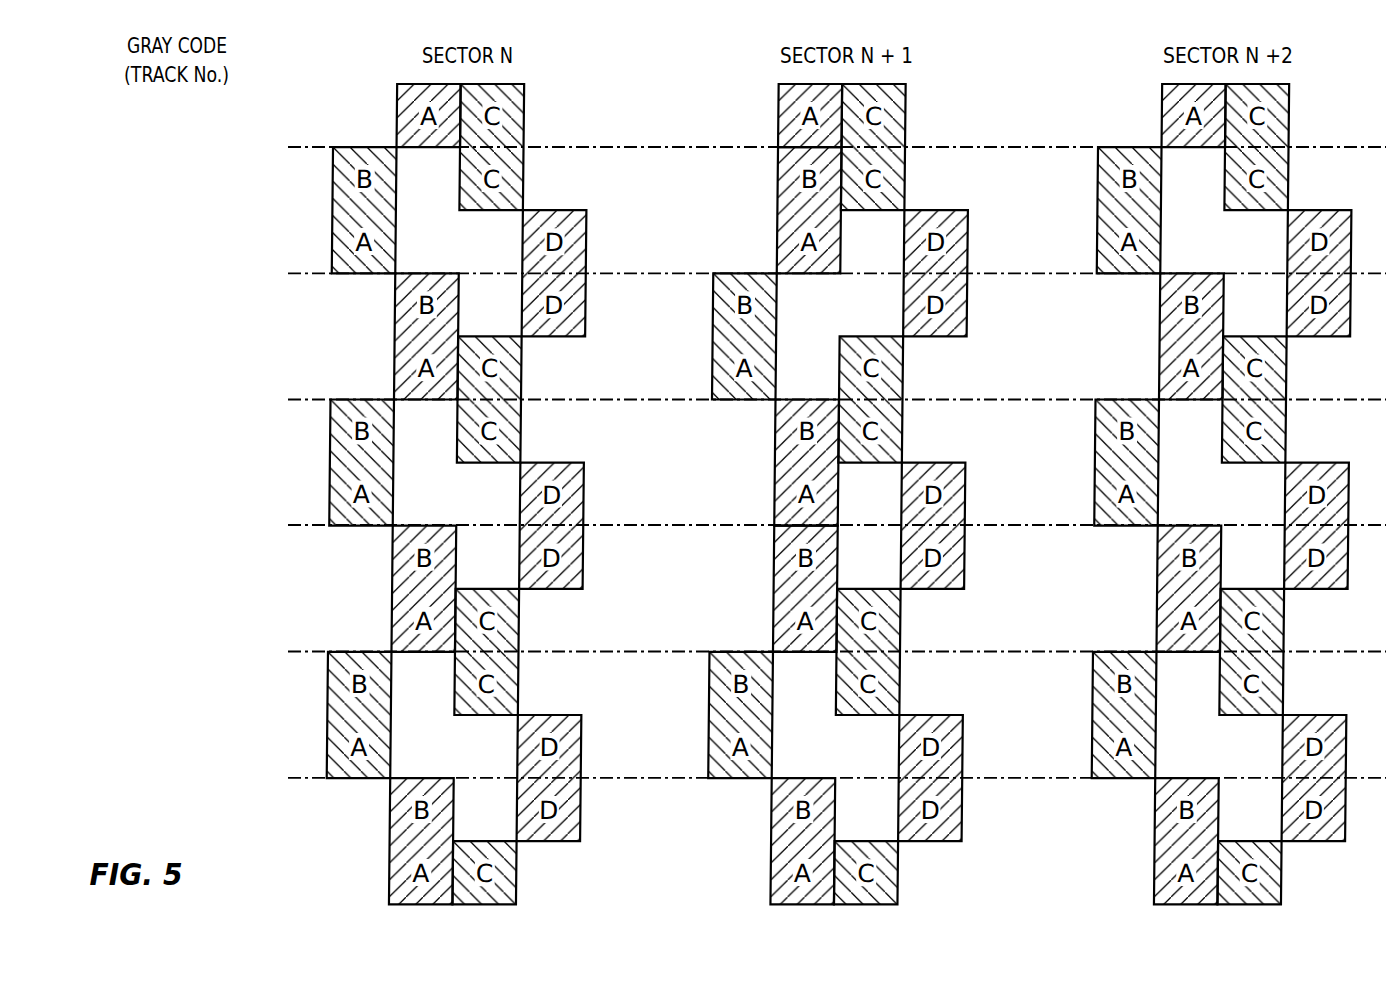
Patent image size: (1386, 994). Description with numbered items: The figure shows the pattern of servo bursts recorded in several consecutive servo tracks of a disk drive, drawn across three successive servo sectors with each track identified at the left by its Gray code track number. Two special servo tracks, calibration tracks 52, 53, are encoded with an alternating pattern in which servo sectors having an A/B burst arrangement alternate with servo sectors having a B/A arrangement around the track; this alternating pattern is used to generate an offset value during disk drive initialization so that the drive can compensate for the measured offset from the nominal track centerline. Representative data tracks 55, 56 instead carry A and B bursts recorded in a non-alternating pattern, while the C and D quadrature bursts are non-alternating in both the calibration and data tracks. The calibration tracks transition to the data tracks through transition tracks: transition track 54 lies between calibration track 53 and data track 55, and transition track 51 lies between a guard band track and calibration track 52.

The transition track 51 is at (285, 212).
The calibration track 52 is at (285, 337).
The calibration track 53 is at (285, 461).
The transition track 54 is at (285, 586).
The data track 55 is at (285, 710).
The data track 56 is at (285, 832).